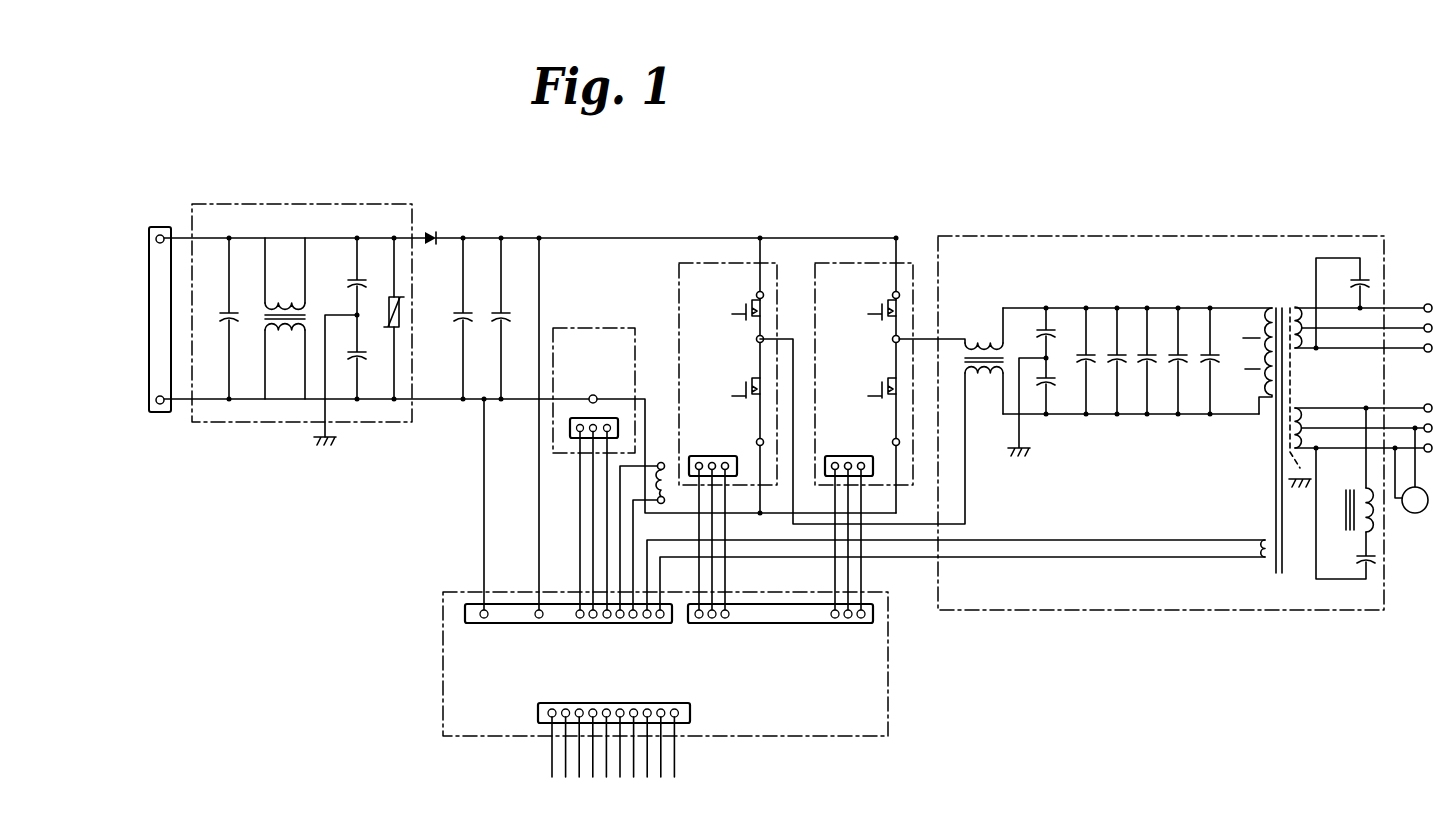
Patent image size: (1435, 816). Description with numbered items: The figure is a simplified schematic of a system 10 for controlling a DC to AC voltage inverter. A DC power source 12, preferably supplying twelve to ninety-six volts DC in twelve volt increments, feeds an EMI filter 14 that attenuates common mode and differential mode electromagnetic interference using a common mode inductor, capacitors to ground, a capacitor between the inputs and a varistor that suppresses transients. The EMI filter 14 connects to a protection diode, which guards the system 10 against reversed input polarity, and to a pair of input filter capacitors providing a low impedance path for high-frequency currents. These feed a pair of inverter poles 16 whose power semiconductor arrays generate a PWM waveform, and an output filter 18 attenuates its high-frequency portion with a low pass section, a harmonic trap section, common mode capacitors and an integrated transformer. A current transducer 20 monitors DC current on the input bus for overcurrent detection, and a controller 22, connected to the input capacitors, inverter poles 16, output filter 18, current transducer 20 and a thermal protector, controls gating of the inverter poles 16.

The system for controlling a DC to AC voltage inverter 10 is at (878, 178).
The DC power source 12 is at (149, 374).
The electromagnetic interference (EMI) filter 14 is at (358, 204).
The inverter poles 16 is at (711, 263).
The output filter 18 is at (1137, 236).
The current transducer 20 is at (604, 328).
The controller 22 is at (895, 664).